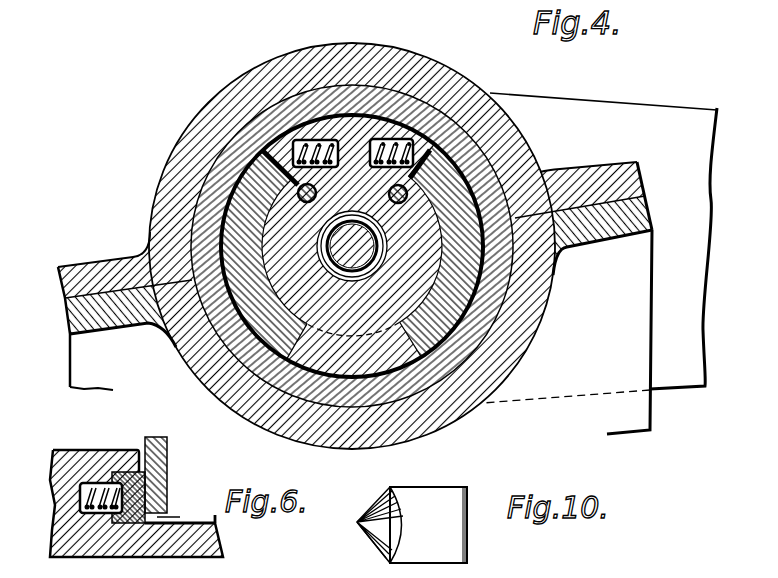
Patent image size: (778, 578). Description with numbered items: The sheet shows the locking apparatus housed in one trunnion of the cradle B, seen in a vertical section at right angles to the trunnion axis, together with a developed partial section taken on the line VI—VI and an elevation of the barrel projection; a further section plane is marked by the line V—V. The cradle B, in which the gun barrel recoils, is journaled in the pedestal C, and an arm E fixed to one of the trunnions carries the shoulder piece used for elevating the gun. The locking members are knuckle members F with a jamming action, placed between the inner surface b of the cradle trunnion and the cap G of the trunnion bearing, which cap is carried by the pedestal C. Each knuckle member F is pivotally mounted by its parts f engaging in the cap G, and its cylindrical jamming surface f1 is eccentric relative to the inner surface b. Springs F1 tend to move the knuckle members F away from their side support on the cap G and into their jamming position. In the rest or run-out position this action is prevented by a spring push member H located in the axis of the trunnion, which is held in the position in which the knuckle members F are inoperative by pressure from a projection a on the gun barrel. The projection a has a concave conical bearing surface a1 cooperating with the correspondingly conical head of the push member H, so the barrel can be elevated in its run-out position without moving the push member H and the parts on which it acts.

In FIG. 4, the inner surface of the cradle trunnion b is at (220, 175).
In FIG. 4, the cradle B is at (213, 168).
In FIG. 4, the knuckle members F is at (250, 152).
In FIG. 6, the knuckle members F is at (130, 483).
In FIG. 4, the springs F1 is at (323, 138).
In FIG. 6, the springs F1 is at (100, 488).
In FIG. 4, the pivot parts of the knuckle members f is at (298, 199).
In FIG. 4, the cylindrical jamming surface f1 is at (278, 122).
In FIG. 6, the cylindrical jamming surface f1 is at (103, 499).
In FIG. 4, the spring push member H is at (252, 309).
In FIG. 6, the spring push member H is at (158, 475).
In FIG. 4, the cap of the trunnion bearing G is at (356, 128).
In FIG. 6, the cap of the trunnion bearing G is at (200, 531).
In FIG. 4, the arm E is at (655, 112).
In FIG. 4, the pedestal C is at (630, 324).
In FIG. 4, the section line V— V is at (663, 250).
In FIG. 4, the section line VI— VI is at (372, 152).
In FIG. 10, the projection on the gun barrel a is at (440, 523).
In FIG. 10, the concave conical bearing surface a1 is at (373, 533).